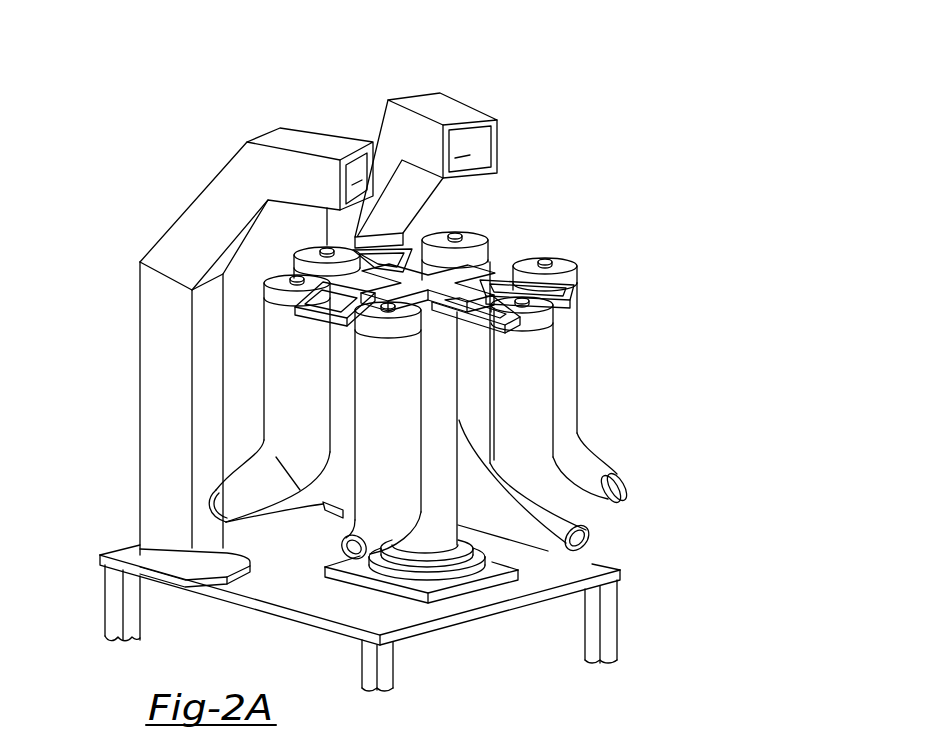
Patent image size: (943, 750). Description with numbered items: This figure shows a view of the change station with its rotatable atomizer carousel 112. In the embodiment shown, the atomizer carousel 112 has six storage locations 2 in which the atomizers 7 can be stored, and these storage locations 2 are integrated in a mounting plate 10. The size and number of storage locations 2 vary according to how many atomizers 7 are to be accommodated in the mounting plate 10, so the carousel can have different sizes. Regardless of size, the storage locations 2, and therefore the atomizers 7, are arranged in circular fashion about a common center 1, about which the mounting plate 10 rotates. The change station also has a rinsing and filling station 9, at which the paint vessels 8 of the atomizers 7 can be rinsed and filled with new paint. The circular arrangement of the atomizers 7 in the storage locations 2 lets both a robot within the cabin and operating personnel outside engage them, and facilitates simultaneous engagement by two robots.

The common center 1 is at (443, 417).
The storage locations 2 is at (493, 235).
The atomizers 7 is at (598, 460).
The paint vessels 8 is at (567, 352).
The rinsing and filling station 9 is at (474, 146).
The mounting plate 10 is at (300, 312).
The rotatable atomizer carousel 112 is at (240, 273).